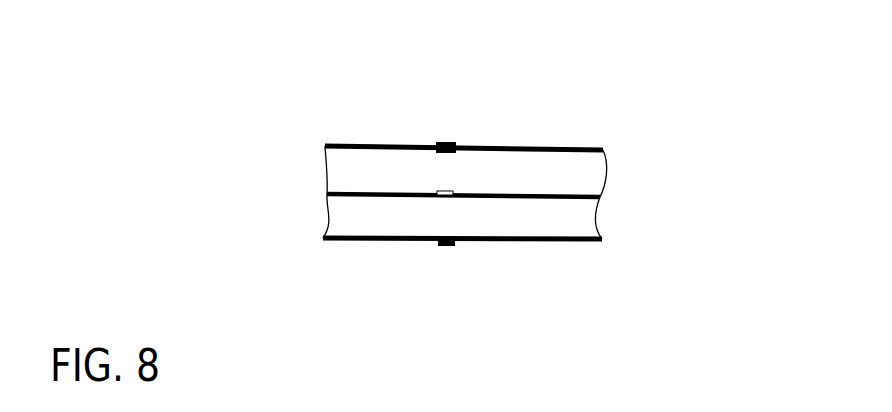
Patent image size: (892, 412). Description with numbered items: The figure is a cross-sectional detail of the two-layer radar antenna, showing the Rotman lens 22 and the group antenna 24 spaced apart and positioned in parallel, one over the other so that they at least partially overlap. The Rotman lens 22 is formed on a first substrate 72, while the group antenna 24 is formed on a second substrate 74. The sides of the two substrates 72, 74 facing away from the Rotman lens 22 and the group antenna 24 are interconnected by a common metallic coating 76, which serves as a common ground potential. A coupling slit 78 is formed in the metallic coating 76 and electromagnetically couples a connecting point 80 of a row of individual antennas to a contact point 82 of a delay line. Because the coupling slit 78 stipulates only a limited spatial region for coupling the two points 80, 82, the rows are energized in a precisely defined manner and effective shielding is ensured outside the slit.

The Rotman lens 22 is at (323, 238).
The group antenna 24 is at (325, 146).
The first substrate 72 is at (577, 225).
The second substrate 74 is at (579, 170).
The metallic coating 76 is at (327, 194).
The coupling slit 78 is at (442, 198).
The connecting point 80 is at (442, 143).
The contact point 82 is at (444, 243).